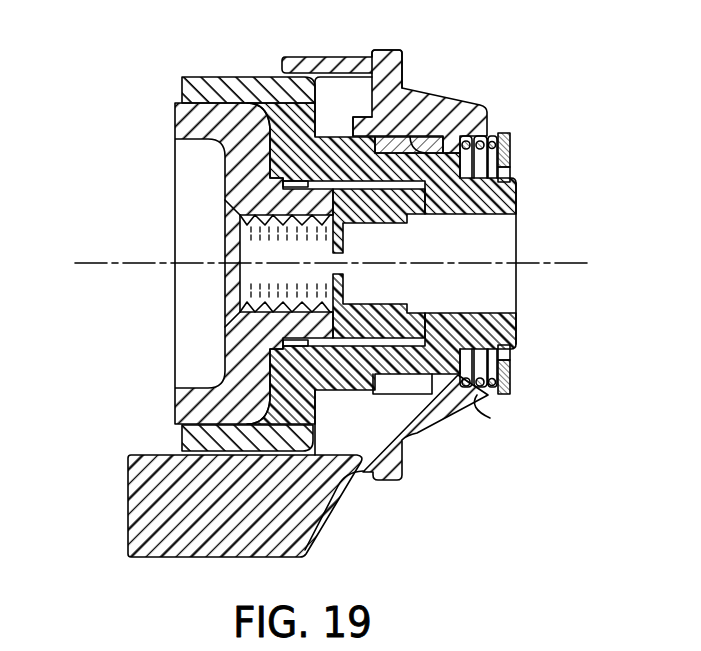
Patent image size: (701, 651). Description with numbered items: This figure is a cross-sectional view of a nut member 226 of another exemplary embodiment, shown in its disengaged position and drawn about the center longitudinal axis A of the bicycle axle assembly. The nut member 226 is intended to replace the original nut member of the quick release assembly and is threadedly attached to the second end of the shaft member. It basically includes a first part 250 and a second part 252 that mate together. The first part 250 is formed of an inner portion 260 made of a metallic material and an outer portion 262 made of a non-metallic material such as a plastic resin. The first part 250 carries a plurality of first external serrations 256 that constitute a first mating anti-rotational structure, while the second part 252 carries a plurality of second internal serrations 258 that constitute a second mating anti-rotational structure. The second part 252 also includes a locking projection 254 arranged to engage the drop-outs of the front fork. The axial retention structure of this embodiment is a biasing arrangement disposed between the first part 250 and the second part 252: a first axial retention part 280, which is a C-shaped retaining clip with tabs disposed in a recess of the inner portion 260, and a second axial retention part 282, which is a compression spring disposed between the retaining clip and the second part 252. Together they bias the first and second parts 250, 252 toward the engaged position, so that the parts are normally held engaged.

The nut member 226 is at (522, 59).
The first part 250 is at (80, 64).
The second part 252 is at (412, 69).
The locking projection 254 is at (160, 503).
The first external serrations 256 is at (386, 115).
The second internal serrations 258 is at (438, 150).
The inner portion 260 is at (166, 116).
The outer portion 262 is at (168, 84).
The first axial retention part 280 is at (511, 378).
The second axial retention part 282 is at (490, 418).
The center longitudinal axis A is at (568, 262).